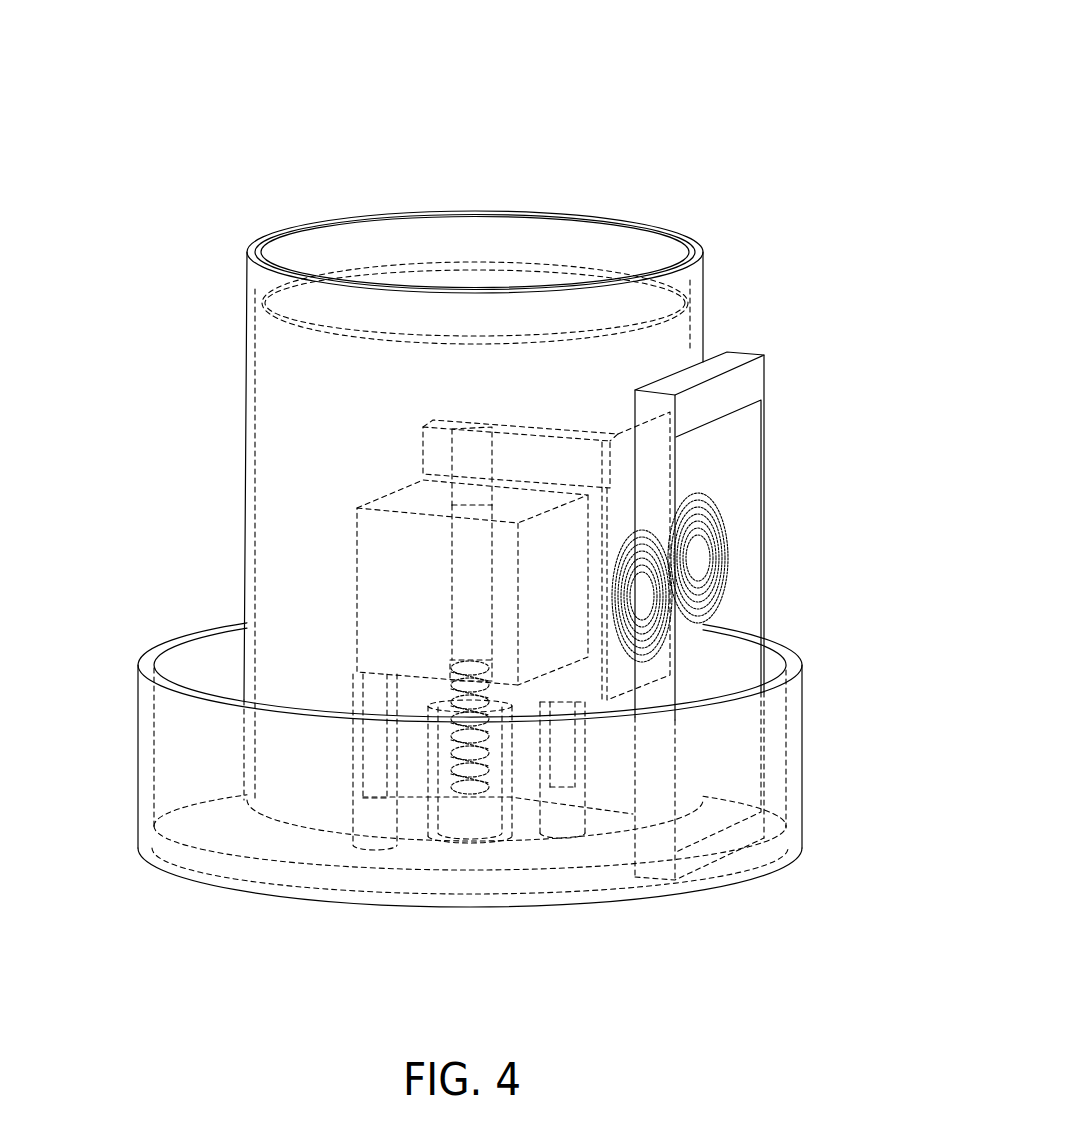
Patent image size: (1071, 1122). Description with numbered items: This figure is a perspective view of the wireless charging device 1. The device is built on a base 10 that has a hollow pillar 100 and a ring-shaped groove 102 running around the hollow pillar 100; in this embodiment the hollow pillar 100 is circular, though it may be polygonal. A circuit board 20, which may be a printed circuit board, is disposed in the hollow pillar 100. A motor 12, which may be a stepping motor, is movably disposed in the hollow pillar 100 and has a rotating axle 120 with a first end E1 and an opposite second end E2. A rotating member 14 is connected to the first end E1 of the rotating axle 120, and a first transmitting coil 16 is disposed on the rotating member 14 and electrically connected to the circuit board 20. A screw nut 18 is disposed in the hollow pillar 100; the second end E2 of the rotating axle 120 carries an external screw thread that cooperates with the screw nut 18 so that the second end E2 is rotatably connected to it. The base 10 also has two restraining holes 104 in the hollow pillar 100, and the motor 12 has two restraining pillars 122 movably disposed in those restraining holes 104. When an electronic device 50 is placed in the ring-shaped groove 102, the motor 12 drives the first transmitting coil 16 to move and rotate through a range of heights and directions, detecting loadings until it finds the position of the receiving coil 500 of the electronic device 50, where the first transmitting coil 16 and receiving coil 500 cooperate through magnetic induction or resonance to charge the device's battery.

The wireless charging device 1 is at (672, 92).
The base 10 is at (68, 477).
The hollow pillar 100 is at (245, 510).
The ring-shaped groove 102 is at (212, 646).
The restraining holes 104 is at (353, 760).
The circuit board 20 is at (675, 322).
The motor 12 is at (407, 490).
The rotating axle 120 is at (455, 554).
The rotating member 14 is at (535, 432).
The first end E1 is at (473, 422).
The second end E2 is at (480, 797).
The first transmitting coil 16 is at (657, 642).
The screw nut 18 is at (493, 730).
The electronic device 50 is at (767, 362).
The receiving coil 500 is at (718, 527).
The restraining pillars 122 is at (373, 800).